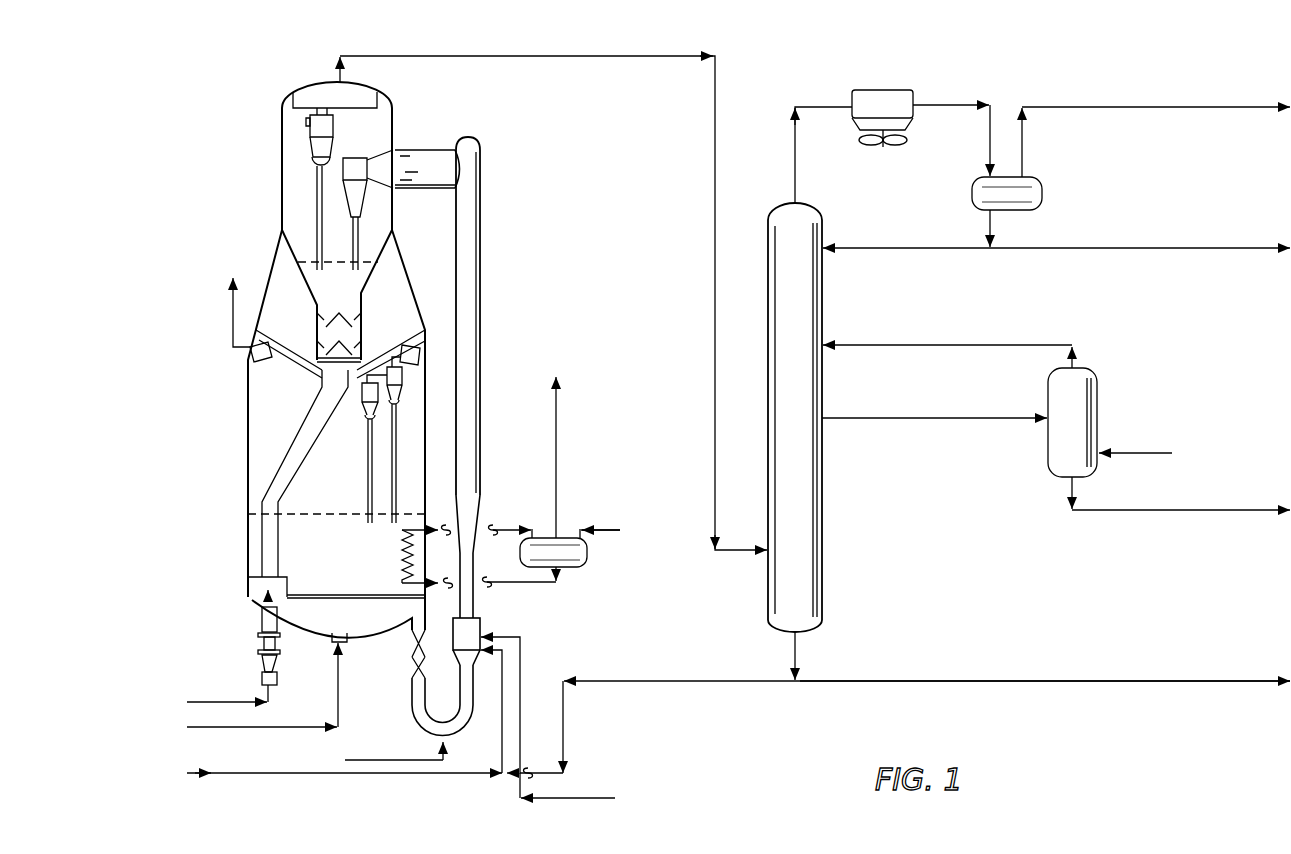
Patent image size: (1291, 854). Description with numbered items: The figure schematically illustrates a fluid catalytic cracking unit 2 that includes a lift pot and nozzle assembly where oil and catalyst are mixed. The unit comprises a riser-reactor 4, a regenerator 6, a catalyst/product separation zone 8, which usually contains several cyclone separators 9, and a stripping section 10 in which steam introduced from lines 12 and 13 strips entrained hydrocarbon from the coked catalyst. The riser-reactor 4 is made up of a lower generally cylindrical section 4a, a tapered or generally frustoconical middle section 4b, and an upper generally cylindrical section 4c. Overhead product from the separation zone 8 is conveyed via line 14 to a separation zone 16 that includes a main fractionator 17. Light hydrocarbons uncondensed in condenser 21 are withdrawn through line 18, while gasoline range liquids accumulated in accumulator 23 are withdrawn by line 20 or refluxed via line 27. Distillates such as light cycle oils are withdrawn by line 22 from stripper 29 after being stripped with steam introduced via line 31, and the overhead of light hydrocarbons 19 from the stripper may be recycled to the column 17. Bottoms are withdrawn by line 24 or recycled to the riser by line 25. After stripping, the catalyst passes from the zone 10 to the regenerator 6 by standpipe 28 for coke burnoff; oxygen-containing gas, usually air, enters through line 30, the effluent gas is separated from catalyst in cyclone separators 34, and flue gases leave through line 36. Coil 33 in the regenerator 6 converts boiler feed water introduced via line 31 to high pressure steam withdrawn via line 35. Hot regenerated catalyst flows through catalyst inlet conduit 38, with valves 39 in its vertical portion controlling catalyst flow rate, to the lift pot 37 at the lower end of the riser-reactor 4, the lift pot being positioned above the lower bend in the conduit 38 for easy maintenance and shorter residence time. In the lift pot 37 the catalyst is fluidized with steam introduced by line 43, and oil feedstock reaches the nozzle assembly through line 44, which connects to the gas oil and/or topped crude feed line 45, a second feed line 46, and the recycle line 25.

The fluid catalytic cracking unit 2 is at (236, 226).
The riser-reactor 4 is at (482, 292).
The lower generally cylindrical section 4a is at (476, 597).
The tapered or generally frustoconical middle section 4b is at (483, 510).
The upper generally cylindrical section 4c is at (457, 239).
The regenerator 6 is at (247, 400).
The catalyst/product separation zone 8 is at (281, 146).
The cyclone separators 9 is at (336, 129).
The stripping section or zone 10 is at (317, 322).
The line 12 is at (429, 328).
The line 13 is at (228, 701).
The line 14 is at (518, 57).
The separation zone 16 is at (826, 90).
The main fractionator 17 is at (823, 318).
The line 18 is at (1130, 107).
The overhead of light hydrocarbons 19 is at (964, 345).
The line 20 is at (1088, 248).
The condenser 21 is at (875, 90).
The line 22 is at (1145, 511).
The accumulator 23 is at (1044, 195).
The line 24 is at (1018, 681).
The recycle line 25 is at (668, 682).
The line 27 is at (880, 249).
The line or standpipe 28 is at (325, 400).
The stripper 29 is at (1098, 383).
The line 30 is at (337, 688).
The line 31 is at (587, 529).
The coil 33 is at (401, 560).
The cyclone separators 34 is at (385, 400).
The line 35 is at (556, 400).
The line 36 is at (233, 318).
The lift pot 37 is at (484, 627).
The catalyst inlet conduit 38 is at (411, 690).
The valves 39 is at (411, 660).
The line 43 is at (395, 760).
The line 44 is at (502, 748).
The feed line 45 is at (345, 773).
The second feed line 46 is at (588, 798).